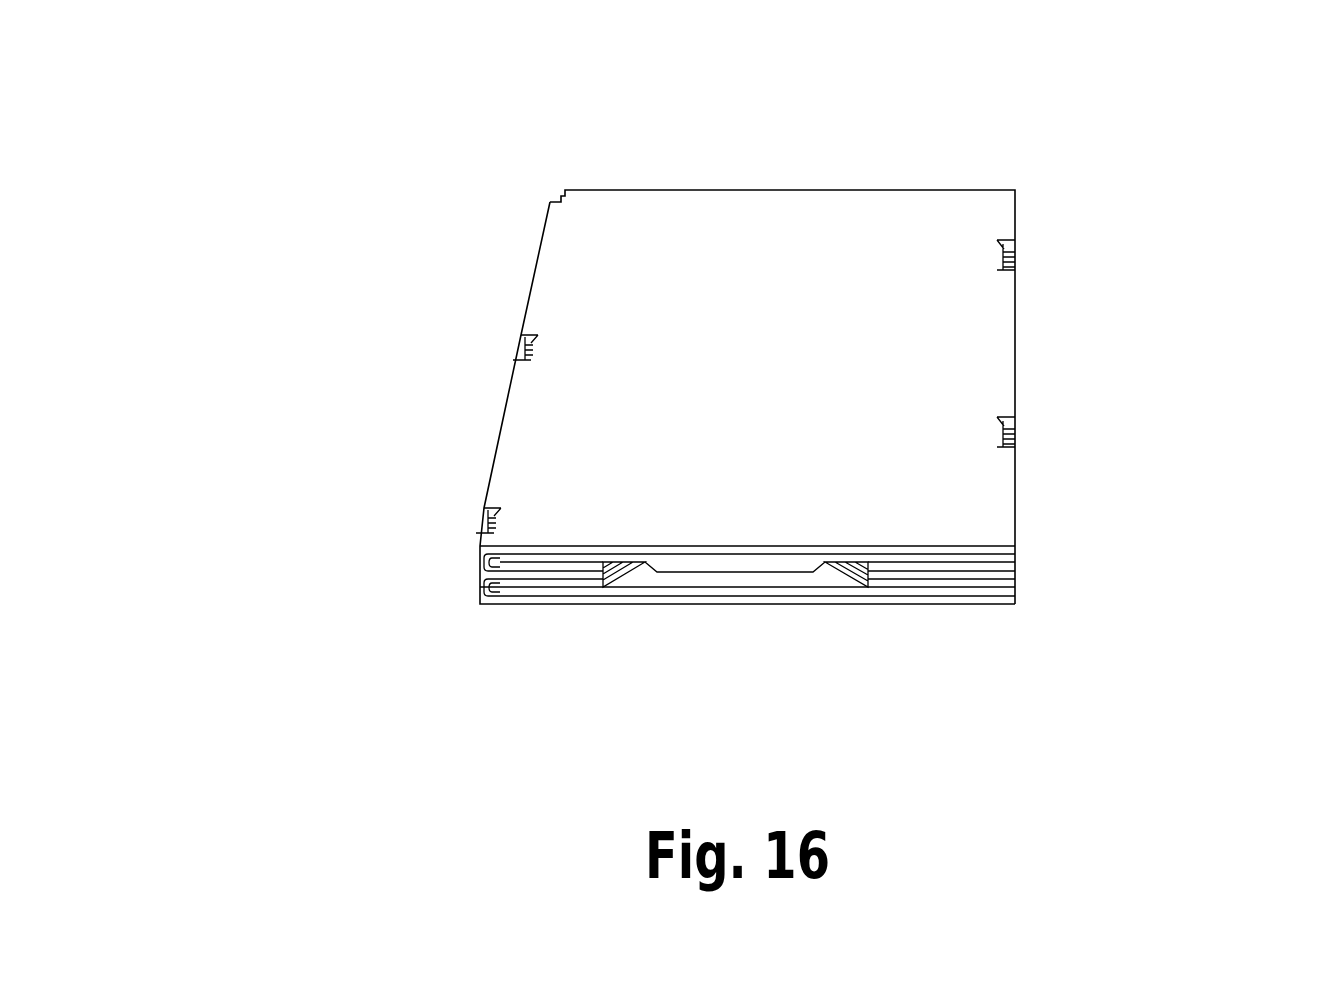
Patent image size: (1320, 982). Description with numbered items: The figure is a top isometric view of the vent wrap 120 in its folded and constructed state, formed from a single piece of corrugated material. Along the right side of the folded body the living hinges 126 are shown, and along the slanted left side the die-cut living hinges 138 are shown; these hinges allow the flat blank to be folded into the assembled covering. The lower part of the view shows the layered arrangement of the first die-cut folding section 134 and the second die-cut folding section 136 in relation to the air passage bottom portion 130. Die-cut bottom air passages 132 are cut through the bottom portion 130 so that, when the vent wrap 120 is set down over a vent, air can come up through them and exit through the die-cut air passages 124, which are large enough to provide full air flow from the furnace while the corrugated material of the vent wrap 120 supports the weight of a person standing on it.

The vent wrap 120 is at (387, 186).
The die-cut air passages 124 is at (832, 577).
The living hinges 126 is at (1015, 258).
The air passage bottom portion 130 is at (635, 600).
The die-cut bottom air passages 132 is at (763, 565).
The first die-cut folding section 134 is at (568, 581).
The second die-cut folding section 136 is at (483, 597).
The die-cut living hinges 138 is at (522, 356).